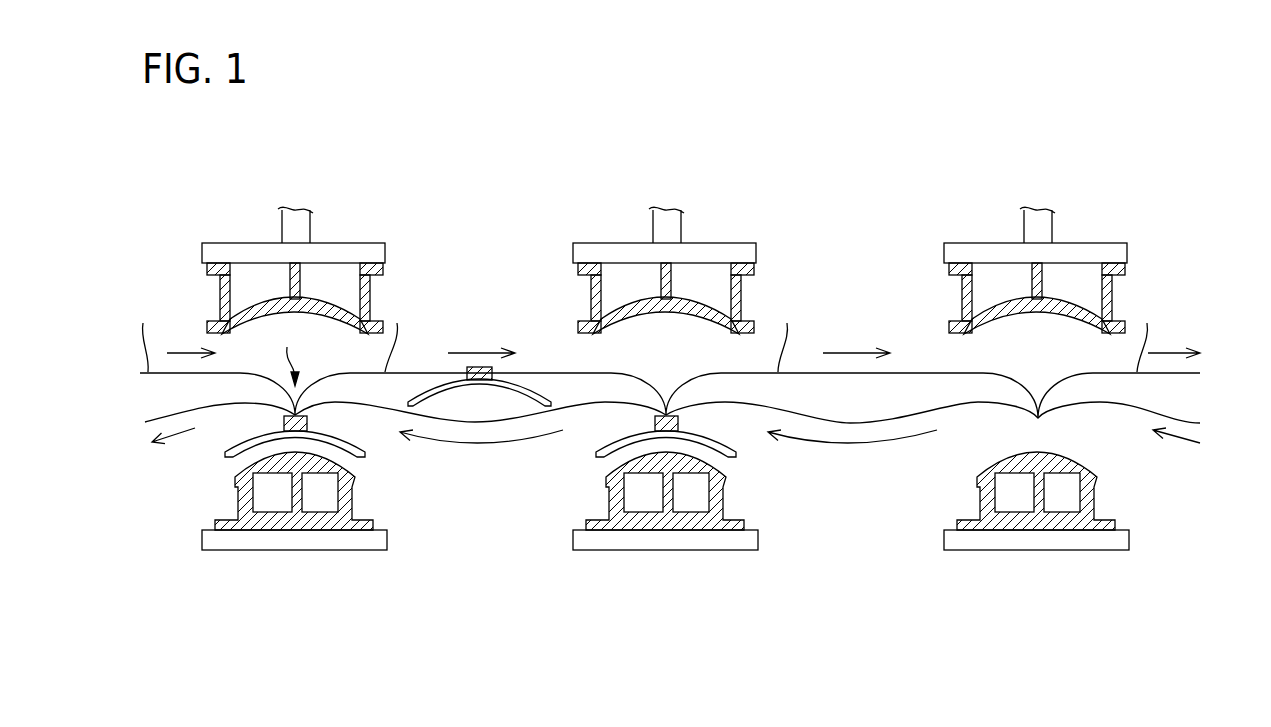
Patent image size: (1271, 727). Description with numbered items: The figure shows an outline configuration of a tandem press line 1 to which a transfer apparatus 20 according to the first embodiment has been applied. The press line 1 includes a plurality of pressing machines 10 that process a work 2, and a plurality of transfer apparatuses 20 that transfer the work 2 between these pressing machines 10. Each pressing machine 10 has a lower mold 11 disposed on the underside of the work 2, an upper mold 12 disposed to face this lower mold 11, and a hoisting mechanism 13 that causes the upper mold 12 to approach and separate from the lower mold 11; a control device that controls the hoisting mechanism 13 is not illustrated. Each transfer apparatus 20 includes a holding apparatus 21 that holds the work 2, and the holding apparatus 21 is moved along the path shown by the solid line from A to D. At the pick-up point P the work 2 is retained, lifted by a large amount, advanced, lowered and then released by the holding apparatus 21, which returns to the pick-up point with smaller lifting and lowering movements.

The press line 1 is at (893, 125).
The work 2 is at (537, 400).
The pressing machine 10 is at (680, 250).
The lower mold 11 is at (350, 501).
The upper mold 12 is at (366, 287).
The hoisting mechanism 13 is at (305, 230).
The transfer apparatus 20 is at (172, 320).
The holding apparatus 21 is at (466, 370).